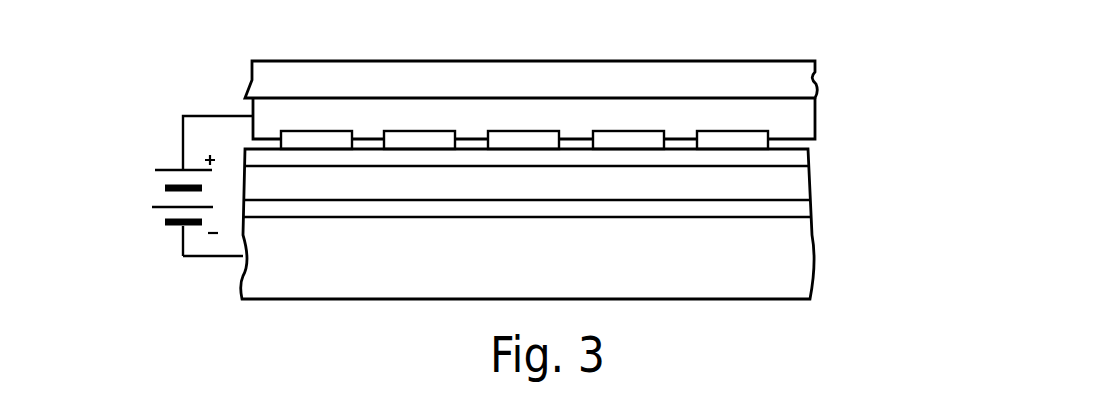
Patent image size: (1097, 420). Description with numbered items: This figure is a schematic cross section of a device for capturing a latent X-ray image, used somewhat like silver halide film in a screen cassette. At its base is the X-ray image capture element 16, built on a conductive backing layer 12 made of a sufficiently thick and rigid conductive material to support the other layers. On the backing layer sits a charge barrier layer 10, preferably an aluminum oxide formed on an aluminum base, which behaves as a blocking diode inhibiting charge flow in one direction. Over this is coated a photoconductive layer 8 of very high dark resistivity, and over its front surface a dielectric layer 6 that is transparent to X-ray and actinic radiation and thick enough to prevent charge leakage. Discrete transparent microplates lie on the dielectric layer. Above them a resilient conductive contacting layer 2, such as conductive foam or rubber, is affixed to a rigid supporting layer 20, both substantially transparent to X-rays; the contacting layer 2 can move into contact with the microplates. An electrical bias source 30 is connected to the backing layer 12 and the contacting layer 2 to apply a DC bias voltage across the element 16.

The rigid supporting layer 20 is at (793, 70).
The conductive contacting layer 2 is at (793, 115).
The dielectric layer 6 is at (798, 160).
The photoconductive layer 8 is at (787, 182).
The charge barrier layer 10 is at (792, 207).
The conductive backing layer 12 is at (780, 263).
The electrical bias source 30 is at (168, 158).
The X-ray image capture element 16 is at (245, 247).